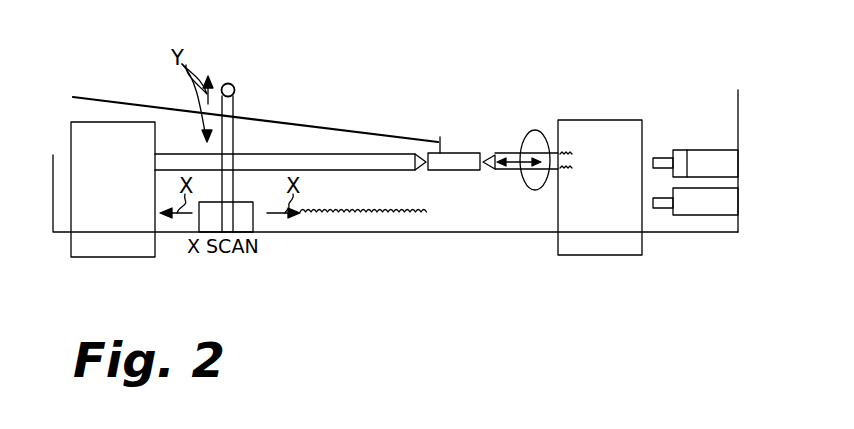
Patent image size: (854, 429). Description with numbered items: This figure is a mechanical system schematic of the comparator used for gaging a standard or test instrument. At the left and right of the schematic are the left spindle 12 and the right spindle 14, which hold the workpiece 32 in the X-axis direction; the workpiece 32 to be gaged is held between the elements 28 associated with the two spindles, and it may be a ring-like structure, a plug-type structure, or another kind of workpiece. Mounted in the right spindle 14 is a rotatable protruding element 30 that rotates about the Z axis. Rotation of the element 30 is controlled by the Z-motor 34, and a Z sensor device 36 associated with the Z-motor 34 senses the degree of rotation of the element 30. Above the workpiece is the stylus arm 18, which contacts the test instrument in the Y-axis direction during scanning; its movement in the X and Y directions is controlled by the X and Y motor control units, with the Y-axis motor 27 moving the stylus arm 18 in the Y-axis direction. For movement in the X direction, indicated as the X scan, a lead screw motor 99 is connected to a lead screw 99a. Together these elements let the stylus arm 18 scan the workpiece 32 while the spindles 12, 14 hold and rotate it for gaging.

The left spindle 12 is at (118, 257).
The right spindle 14 is at (590, 120).
The stylus arm 18 is at (108, 98).
The Y-axis motor 27 is at (235, 90).
The elements 28 is at (353, 170).
The rotatable protruding element 30 is at (500, 110).
The workpiece 32 is at (454, 170).
The Z-motor 34 is at (687, 150).
The Z sensor device 36 is at (725, 150).
The lead screw motor 99 is at (703, 215).
The lead screw 99a is at (332, 212).